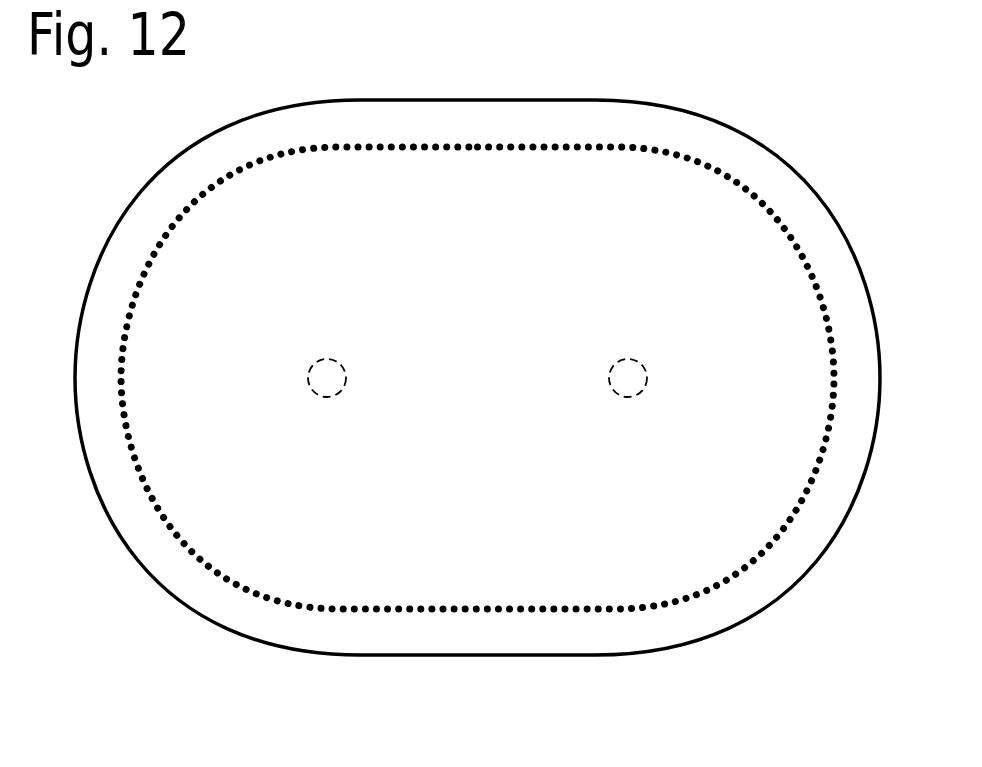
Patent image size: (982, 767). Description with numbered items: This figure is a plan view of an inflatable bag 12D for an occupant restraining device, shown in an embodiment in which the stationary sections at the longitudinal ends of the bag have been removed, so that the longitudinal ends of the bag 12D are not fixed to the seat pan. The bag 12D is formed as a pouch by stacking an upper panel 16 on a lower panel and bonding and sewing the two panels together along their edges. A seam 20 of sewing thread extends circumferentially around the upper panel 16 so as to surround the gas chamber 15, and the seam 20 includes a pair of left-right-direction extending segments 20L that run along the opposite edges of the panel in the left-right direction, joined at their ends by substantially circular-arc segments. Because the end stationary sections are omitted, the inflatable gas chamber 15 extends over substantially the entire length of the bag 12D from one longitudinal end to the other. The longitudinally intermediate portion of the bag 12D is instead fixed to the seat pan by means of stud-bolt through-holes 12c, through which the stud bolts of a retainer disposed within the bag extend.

The bag 12D is at (477, 339).
The upper panel 16 is at (289, 128).
The seam 20 is at (477, 377).
The left-right-direction extending segment 20L is at (467, 146).
The stud-bolt through-hole 12c is at (316, 396).
The gas chamber 15 is at (510, 394).